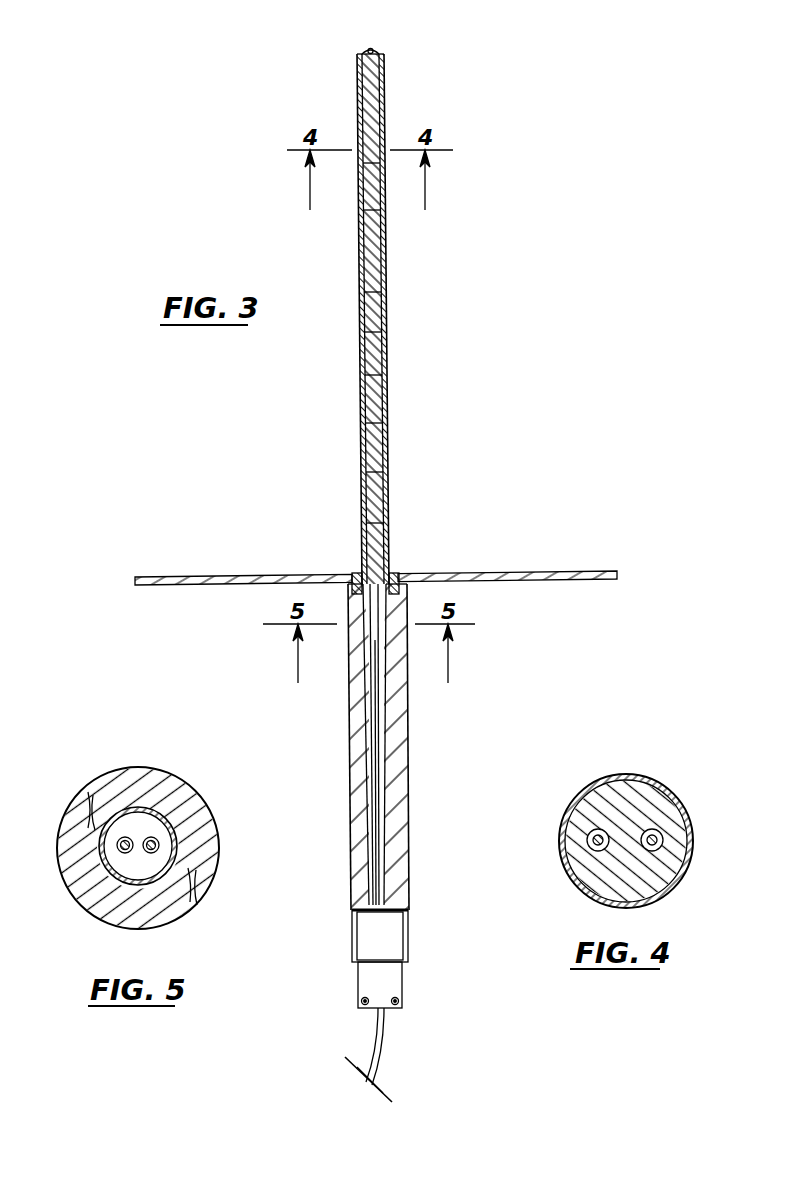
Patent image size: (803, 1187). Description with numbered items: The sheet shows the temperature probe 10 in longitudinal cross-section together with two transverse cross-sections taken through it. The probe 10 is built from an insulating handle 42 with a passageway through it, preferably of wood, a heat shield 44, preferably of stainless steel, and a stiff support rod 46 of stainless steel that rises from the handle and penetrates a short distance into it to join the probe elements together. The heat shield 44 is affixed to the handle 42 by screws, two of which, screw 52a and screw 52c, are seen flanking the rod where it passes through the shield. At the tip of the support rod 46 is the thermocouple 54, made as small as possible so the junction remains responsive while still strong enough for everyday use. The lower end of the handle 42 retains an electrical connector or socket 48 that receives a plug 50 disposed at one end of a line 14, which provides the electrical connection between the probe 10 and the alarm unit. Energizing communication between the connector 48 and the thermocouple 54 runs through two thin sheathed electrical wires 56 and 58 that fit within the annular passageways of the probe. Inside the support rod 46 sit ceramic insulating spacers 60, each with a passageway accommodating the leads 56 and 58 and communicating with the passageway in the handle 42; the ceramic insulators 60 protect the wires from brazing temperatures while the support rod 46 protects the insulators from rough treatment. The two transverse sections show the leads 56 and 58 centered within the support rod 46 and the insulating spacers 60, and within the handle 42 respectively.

In FIG. 3, the probe 10 is at (540, 427).
In FIG. 3, the line 14 is at (385, 1046).
In FIG. 3, the insulating handle 42 is at (408, 740).
In FIG. 5, the insulating handle 42 is at (218, 883).
In FIG. 3, the heat shield 44 is at (578, 571).
In FIG. 3, the support rod 46 is at (388, 316).
In FIG. 5, the support rod 46 is at (85, 903).
In FIG. 4, the support rod 46 is at (664, 786).
In FIG. 3, the electrical connector 48 is at (409, 931).
In FIG. 3, the plug 50 is at (403, 979).
In FIG. 3, the screw 52a is at (354, 576).
In FIG. 3, the screw 52c is at (396, 577).
In FIG. 3, the thermocouple 54 is at (371, 48).
In FIG. 5, the electrical wire 56 is at (153, 841).
In FIG. 4, the electrical wire 56 is at (663, 840).
In FIG. 5, the electrical wire 58 is at (126, 840).
In FIG. 4, the electrical wire 58 is at (588, 840).
In FIG. 3, the ceramic insulating spacer 60 is at (381, 231).